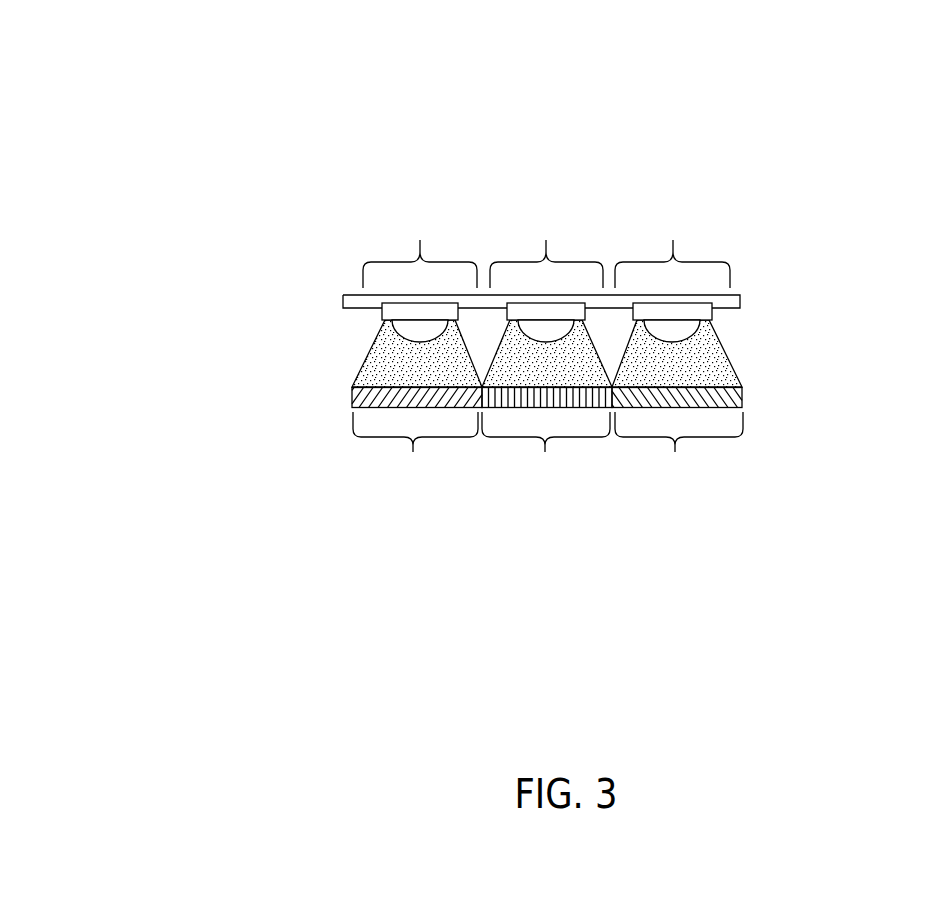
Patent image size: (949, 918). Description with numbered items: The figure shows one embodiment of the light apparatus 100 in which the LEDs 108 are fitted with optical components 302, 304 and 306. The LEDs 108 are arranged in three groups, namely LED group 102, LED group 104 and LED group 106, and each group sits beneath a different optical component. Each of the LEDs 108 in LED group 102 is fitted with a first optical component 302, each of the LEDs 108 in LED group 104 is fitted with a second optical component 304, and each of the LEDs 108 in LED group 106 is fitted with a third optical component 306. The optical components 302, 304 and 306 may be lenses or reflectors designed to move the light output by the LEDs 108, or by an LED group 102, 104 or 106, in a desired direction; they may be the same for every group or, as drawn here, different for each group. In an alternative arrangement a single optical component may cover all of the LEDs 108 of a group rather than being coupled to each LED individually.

The light apparatus 100 is at (745, 297).
The LED group 102 is at (412, 237).
The LED group 104 is at (547, 238).
The LED group 106 is at (677, 238).
The light emitting diode 108 is at (547, 330).
The first optical component 302 is at (413, 453).
The second optical component 304 is at (545, 453).
The third optical component 306 is at (675, 453).